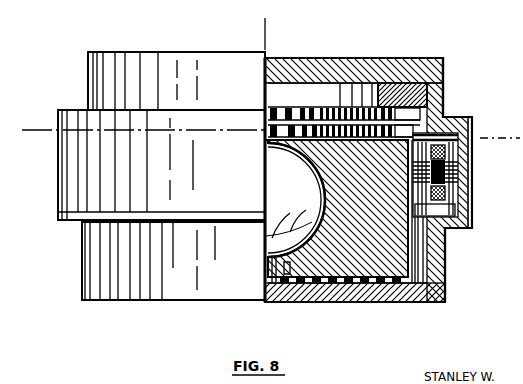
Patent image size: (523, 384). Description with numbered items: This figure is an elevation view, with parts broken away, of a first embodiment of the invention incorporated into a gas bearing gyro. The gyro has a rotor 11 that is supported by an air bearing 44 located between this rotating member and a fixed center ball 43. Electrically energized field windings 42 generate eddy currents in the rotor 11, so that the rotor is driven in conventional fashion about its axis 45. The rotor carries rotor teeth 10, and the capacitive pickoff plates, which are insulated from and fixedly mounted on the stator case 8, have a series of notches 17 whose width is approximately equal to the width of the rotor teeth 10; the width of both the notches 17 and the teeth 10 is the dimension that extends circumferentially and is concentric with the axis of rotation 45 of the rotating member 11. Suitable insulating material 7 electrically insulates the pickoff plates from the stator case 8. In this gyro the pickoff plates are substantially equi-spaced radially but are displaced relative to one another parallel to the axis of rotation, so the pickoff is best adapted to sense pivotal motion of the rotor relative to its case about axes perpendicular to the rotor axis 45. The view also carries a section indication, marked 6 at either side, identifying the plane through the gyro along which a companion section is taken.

The plate 6 is at (37, 100).
The insulating material 7 is at (443, 95).
The stator case 8 is at (355, 60).
The rotor teeth 10 is at (300, 136).
The rotor 11 is at (402, 258).
The notches 17 is at (288, 115).
The field windings 42 is at (463, 188).
The fixed center ball 43 is at (265, 234).
The air bearing 44 is at (265, 262).
The axis 45 is at (277, 107).